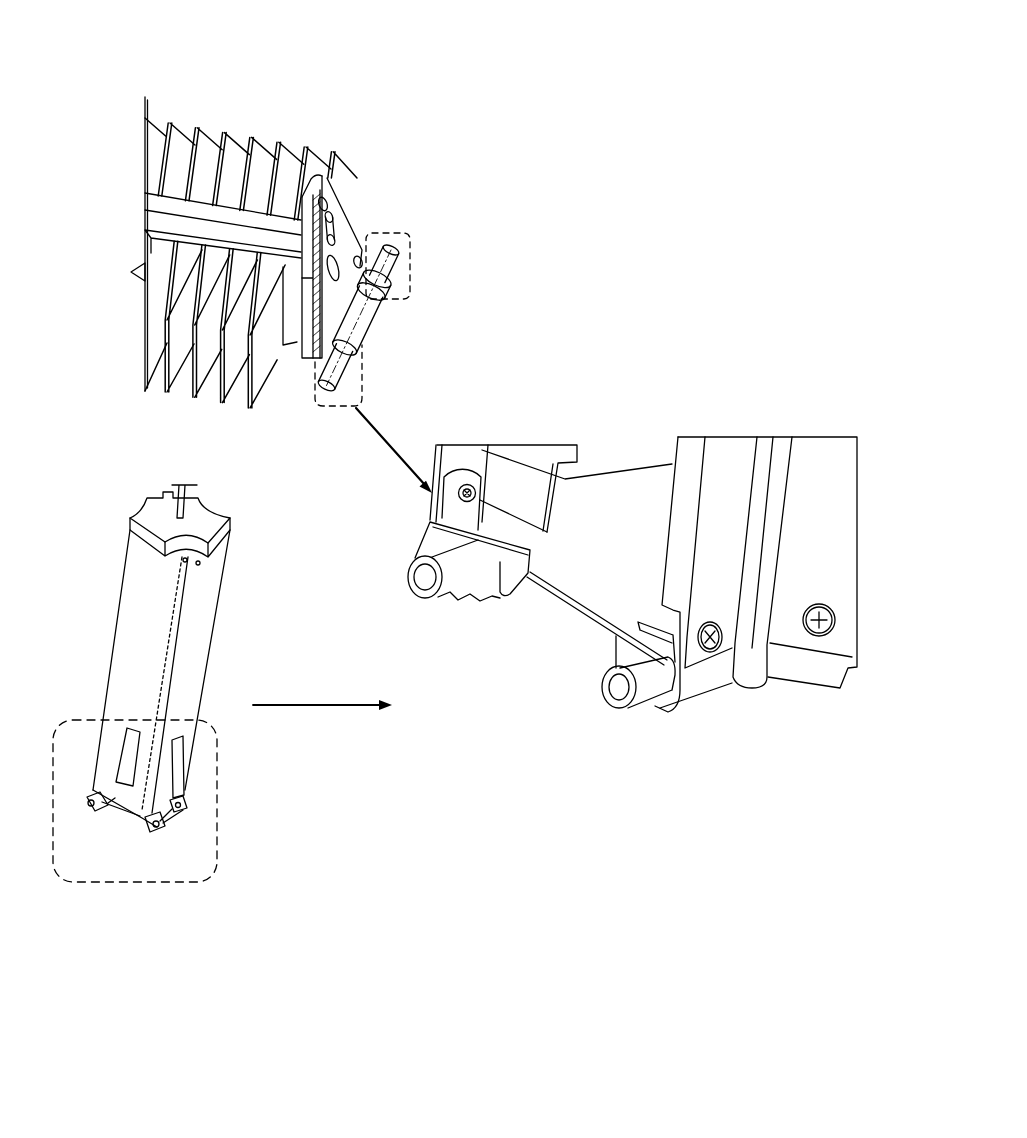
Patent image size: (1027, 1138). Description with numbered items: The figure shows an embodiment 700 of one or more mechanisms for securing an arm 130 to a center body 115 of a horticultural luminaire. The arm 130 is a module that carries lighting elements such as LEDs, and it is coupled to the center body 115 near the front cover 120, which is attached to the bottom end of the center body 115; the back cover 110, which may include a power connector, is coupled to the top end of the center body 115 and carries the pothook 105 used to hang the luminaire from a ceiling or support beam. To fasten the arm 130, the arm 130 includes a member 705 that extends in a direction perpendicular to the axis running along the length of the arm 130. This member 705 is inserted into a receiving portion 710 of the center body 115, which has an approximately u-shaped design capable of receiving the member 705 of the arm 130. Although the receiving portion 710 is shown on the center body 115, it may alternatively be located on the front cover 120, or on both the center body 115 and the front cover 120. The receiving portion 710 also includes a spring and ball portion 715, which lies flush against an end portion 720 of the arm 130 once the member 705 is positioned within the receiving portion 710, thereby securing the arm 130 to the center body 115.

The embodiment of mechanisms for securing an arm to a center body 700 is at (608, 42).
The arm 130 is at (232, 152).
The end portion of arm 720 is at (343, 230).
The member 705 is at (410, 262).
The center body 115 is at (117, 641).
The front cover 120 is at (120, 807).
The back cover 110 is at (150, 512).
The pothook 105 is at (199, 503).
The receiving portion 710 is at (517, 580).
The spring and ball portion 715 is at (425, 582).